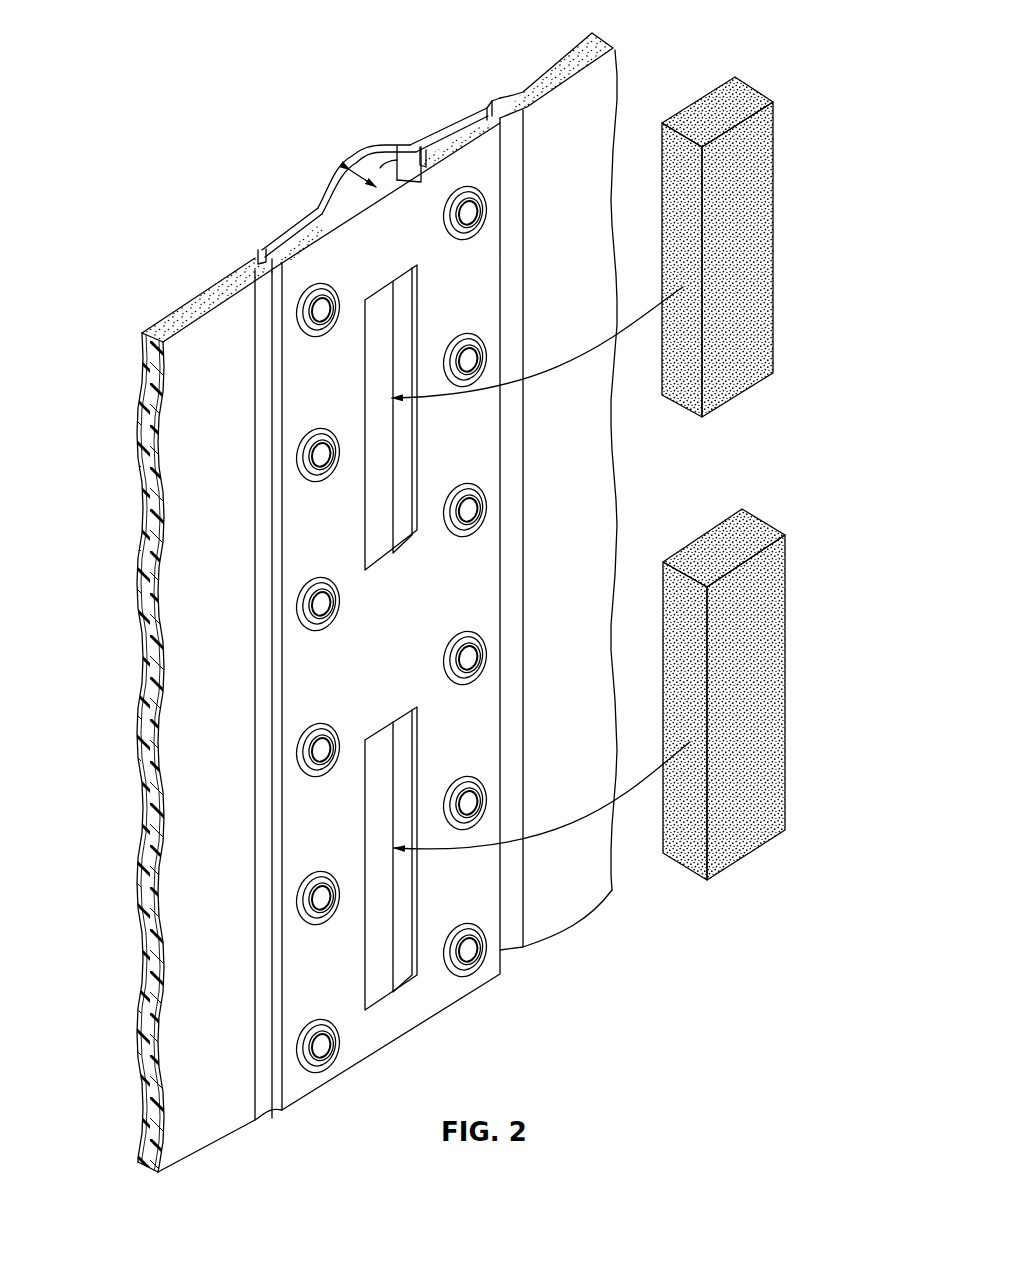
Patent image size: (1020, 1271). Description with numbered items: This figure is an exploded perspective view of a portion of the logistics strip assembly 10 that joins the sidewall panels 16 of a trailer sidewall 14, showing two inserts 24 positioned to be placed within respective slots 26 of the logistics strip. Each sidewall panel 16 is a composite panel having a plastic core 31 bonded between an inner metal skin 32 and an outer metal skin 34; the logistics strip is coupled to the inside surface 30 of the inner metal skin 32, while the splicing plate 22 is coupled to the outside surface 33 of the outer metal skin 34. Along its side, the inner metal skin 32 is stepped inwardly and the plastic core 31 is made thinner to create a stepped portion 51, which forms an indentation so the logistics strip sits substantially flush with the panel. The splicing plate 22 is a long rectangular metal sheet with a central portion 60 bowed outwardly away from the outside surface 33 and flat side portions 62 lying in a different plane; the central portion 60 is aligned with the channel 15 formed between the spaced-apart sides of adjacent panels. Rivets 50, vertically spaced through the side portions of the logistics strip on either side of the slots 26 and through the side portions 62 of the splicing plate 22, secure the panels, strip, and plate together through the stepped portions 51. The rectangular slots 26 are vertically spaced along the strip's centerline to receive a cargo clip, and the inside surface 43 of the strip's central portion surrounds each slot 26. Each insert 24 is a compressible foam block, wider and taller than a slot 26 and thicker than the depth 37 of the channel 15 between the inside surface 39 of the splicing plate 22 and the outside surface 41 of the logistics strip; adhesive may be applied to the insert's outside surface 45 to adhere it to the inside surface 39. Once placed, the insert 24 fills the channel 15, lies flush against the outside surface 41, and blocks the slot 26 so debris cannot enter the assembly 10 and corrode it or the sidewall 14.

The logistics strip assembly 10 is at (305, 195).
The sidewall 14 is at (155, 194).
The channel 15 is at (370, 164).
The sidewall panel 16 is at (630, 56).
The splicing plate 22 is at (410, 141).
The insert 24 is at (800, 130).
The slot 26 is at (388, 322).
The inside surface 30 is at (222, 516).
The plastic core 31 is at (147, 884).
The inner metal skin 32 is at (197, 632).
The outside surface 33 is at (141, 373).
The outer metal skin 34 is at (141, 493).
The depth 37 is at (363, 180).
The inside surface 39 is at (397, 146).
The outside surface 41 is at (481, 110).
The inside surface 43 is at (395, 654).
The outside surface 45 is at (705, 95).
The rivet 50 is at (467, 508).
The stepped portion 51 is at (262, 248).
The central portion 60 is at (376, 186).
The side portion 62 is at (265, 247).